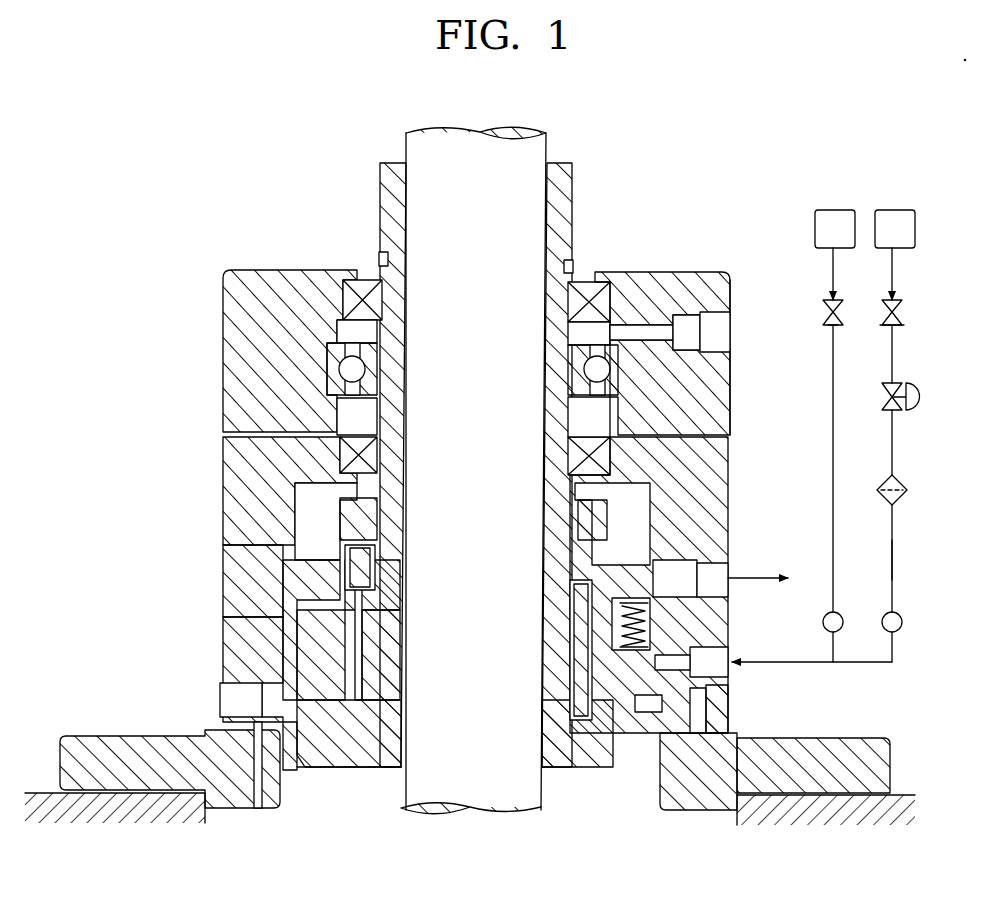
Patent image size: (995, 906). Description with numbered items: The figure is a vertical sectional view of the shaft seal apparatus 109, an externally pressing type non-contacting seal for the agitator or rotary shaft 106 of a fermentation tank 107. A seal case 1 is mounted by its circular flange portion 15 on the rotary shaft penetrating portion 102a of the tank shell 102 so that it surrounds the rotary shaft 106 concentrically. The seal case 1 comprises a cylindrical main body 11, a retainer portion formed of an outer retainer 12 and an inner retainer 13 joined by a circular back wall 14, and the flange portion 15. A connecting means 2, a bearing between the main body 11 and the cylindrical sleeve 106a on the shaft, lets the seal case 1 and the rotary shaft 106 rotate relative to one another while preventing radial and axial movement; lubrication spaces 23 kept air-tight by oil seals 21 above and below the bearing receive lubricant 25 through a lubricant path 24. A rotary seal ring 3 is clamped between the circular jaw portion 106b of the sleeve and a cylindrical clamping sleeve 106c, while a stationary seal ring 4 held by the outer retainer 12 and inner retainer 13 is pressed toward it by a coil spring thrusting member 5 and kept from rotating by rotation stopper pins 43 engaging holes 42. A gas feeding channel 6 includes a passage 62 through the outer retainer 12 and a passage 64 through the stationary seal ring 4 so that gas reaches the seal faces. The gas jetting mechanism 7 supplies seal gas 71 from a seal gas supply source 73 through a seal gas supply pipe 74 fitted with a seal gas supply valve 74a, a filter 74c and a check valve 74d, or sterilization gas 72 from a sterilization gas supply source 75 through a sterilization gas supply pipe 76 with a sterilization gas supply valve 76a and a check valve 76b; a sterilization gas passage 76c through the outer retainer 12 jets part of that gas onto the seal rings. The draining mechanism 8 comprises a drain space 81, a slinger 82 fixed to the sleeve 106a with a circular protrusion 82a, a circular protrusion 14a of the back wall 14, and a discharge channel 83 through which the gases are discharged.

The seal case 1 is at (247, 270).
The connecting means 2 is at (360, 372).
The rotary seal ring 3 is at (317, 745).
The stationary seal ring 4 is at (298, 668).
The thrusting member 5 is at (610, 628).
The gas feeding channel 6 is at (614, 757).
The gas jetting mechanism 7 is at (898, 562).
The draining mechanism 8 is at (750, 560).
The cylindrical main body 11 is at (716, 410).
The outer retainer 12 is at (230, 556).
The inner retainer 13 is at (347, 645).
The back wall 14 is at (343, 583).
The circular protrusion 14a is at (372, 559).
The circular flange portion 15 is at (82, 748).
The oil seal 21 is at (366, 283).
The lubrication space 23 is at (360, 418).
The lubricant path 24 is at (638, 328).
The lubricant 25 is at (780, 330).
The engaging hole 42 is at (290, 650).
The rotation stopper pin 43 is at (295, 592).
The passage on the seal case side 62 is at (712, 702).
The passage on the seal ring side 64 is at (615, 676).
The seal gas 71 is at (900, 296).
The sterilization gas 72 is at (218, 700).
The seal gas supply source 73 is at (893, 210).
The seal gas supply pipe 74 is at (922, 397).
The seal gas supply valve 74a is at (902, 322).
The filter 74c is at (906, 485).
The check valve 74d is at (901, 618).
The sterilization gas supply source 75 is at (828, 210).
The sterilization gas supply pipe 76 is at (831, 432).
The sterilization gas supply valve 76a is at (828, 330).
The check valve 76b is at (840, 613).
The sterilization gas passage 76c is at (257, 722).
The drain space 81 is at (633, 507).
The slinger 82 is at (580, 518).
The circular protrusion 82a is at (300, 527).
The discharge channel 83 is at (733, 592).
The tank shell 102 is at (900, 795).
The rotary shaft penetrating portion 102a is at (105, 808).
The rotary shaft 106 is at (488, 800).
The cylindrical sleeve 106a is at (380, 707).
The circular jaw portion 106b is at (338, 760).
The cylindrical clamping sleeve 106c is at (362, 676).
The fermentation tank 107 is at (633, 795).
The shaft seal apparatus 109 is at (690, 250).